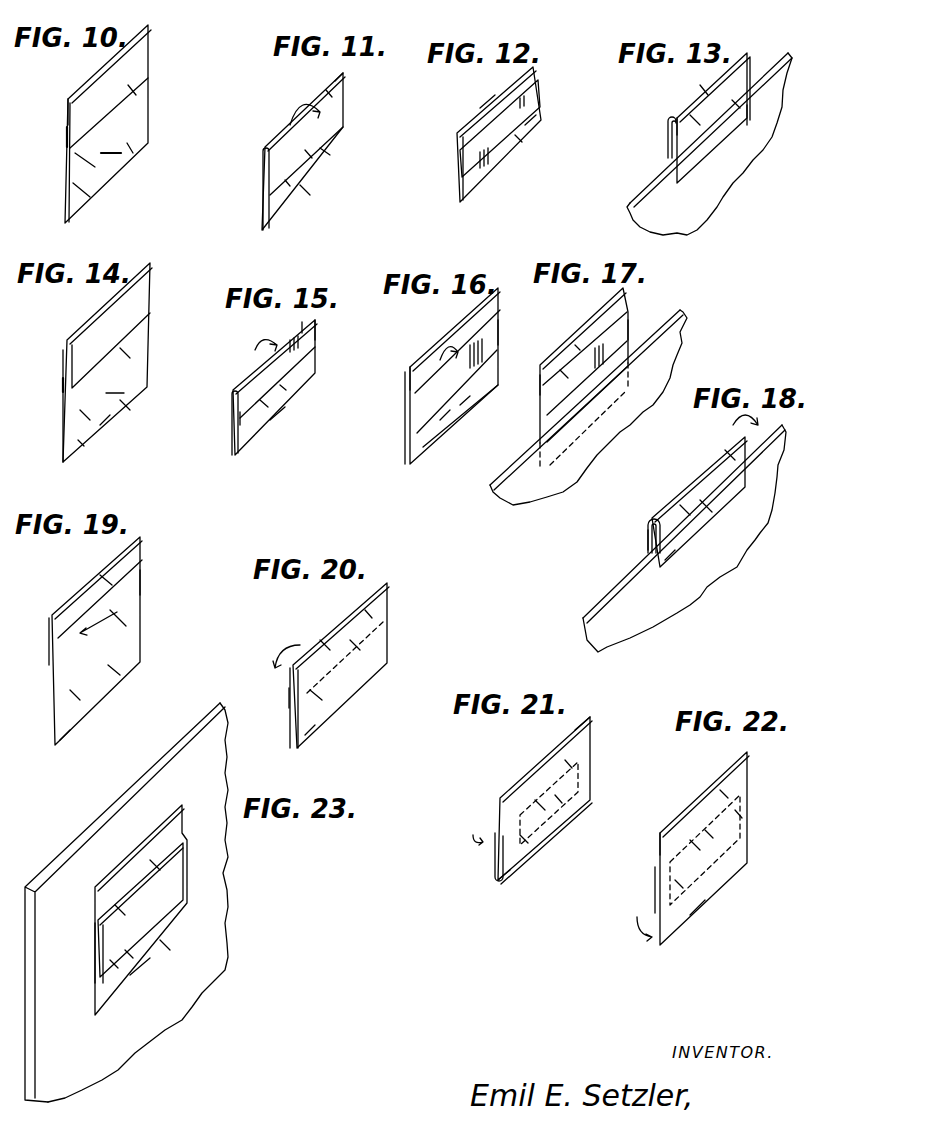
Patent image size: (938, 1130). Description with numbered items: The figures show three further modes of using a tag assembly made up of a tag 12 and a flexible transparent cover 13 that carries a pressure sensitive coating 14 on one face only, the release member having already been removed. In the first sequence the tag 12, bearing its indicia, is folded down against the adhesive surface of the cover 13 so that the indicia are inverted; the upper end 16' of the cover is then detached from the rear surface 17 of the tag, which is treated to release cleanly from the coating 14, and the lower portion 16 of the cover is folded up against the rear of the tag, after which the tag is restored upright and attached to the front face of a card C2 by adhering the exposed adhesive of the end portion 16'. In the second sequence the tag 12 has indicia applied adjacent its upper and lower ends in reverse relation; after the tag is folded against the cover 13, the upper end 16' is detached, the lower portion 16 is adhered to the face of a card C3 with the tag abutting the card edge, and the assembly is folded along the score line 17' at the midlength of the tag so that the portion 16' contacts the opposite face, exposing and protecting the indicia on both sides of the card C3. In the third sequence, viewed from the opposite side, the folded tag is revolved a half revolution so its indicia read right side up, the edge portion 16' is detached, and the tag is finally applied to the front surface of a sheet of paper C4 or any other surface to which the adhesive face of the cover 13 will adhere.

In FIG. 10, the tag 12 is at (143, 59).
In FIG. 11, the tag 12 is at (270, 178).
In FIG. 12, the tag 12 is at (458, 172).
In FIG. 13, the tag 12 is at (672, 117).
In FIG. 14, the tag 12 is at (150, 263).
In FIG. 15, the tag 12 is at (232, 447).
In FIG. 16, the tag 12 is at (415, 432).
In FIG. 18, the tag 12 is at (652, 553).
In FIG. 19, the tag 12 is at (61, 604).
In FIG. 20, the tag 12 is at (293, 712).
In FIG. 21, the tag 12 is at (495, 850).
In FIG. 22, the tag 12 is at (653, 890).
In FIG. 23, the tag 12 is at (95, 958).
In FIG. 10, the flexible transparent cover 13 is at (65, 187).
In FIG. 11, the flexible transparent cover 13 is at (263, 212).
In FIG. 12, the flexible transparent cover 13 is at (463, 202).
In FIG. 13, the flexible transparent cover 13 is at (745, 53).
In FIG. 14, the flexible transparent cover 13 is at (63, 440).
In FIG. 15, the flexible transparent cover 13 is at (298, 327).
In FIG. 16, the flexible transparent cover 13 is at (410, 403).
In FIG. 17, the flexible transparent cover 13 is at (584, 377).
In FIG. 18, the flexible transparent cover 13 is at (683, 490).
In FIG. 19, the flexible transparent cover 13 is at (149, 646).
In FIG. 20, the flexible transparent cover 13 is at (397, 620).
In FIG. 21, the flexible transparent cover 13 is at (592, 777).
In FIG. 22, the flexible transparent cover 13 is at (760, 834).
In FIG. 23, the flexible transparent cover 13 is at (195, 893).
In FIG. 10, the pressure sensitive coating 14 is at (111, 143).
In FIG. 11, the pressure sensitive coating 14 is at (328, 153).
In FIG. 14, the pressure sensitive coating 14 is at (115, 384).
In FIG. 16, the pressure sensitive coating 14 is at (477, 393).
In FIG. 10, the lower portion of the cover 16 is at (125, 113).
In FIG. 11, the lower portion of the cover 16 is at (320, 198).
In FIG. 12, the lower portion of the cover 16 is at (549, 129).
In FIG. 13, the lower portion of the cover 16 is at (653, 127).
In FIG. 14, the lower portion of the cover 16 is at (122, 422).
In FIG. 15, the lower portion of the cover 16 is at (288, 423).
In FIG. 19, the lower portion of the cover 16 is at (79, 742).
In FIG. 20, the lower portion of the cover 16 is at (327, 740).
In FIG. 21, the lower portion of the cover 16 is at (598, 727).
In FIG. 22, the lower portion of the cover 16 is at (636, 846).
In FIG. 23, the lower portion of the cover 16 is at (156, 910).
In FIG. 10, the upper end of the cover 16' is at (43, 145).
In FIG. 11, the upper end of the cover 16' is at (359, 87).
In FIG. 12, the upper end of the cover 16' is at (470, 100).
In FIG. 13, the upper end of the cover 16' is at (752, 123).
In FIG. 14, the upper end of the cover 16' is at (41, 395).
In FIG. 15, the upper end of the cover 16' is at (336, 327).
In FIG. 16, the upper end of the cover 16' is at (389, 376).
In FIG. 17, the upper end of the cover 16' is at (521, 386).
In FIG. 18, the upper end of the cover 16' is at (689, 565).
In FIG. 19, the upper end of the cover 16' is at (162, 581).
In FIG. 20, the upper end of the cover 16' is at (269, 704).
In FIG. 21, the upper end of the cover 16' is at (480, 886).
In FIG. 22, the upper end of the cover 16' is at (716, 914).
In FIG. 23, the upper end of the cover 16' is at (154, 972).
In FIG. 10, the rear surface of the tag 17 is at (46, 112).
In FIG. 12, the rear surface of the tag 17 is at (519, 128).
In FIG. 14, the rear surface of the tag 17 is at (106, 337).
In FIG. 15, the rear surface of the tag 17 is at (218, 428).
In FIG. 16, the rear surface of the tag 17 is at (477, 386).
In FIG. 17, the rear surface of the tag 17 is at (609, 378).
In FIG. 19, the rear surface of the tag 17 is at (117, 584).
In FIG. 16, the score line 17' is at (520, 329).
In FIG. 17, the score line 17' is at (626, 364).
In FIG. 18, the score line 17' is at (622, 537).
In FIG. 13, the card C2 is at (710, 198).
In FIG. 17, the card C3 is at (680, 340).
In FIG. 18, the card C3 is at (760, 531).
In FIG. 23, the sheet of paper C4 is at (218, 933).